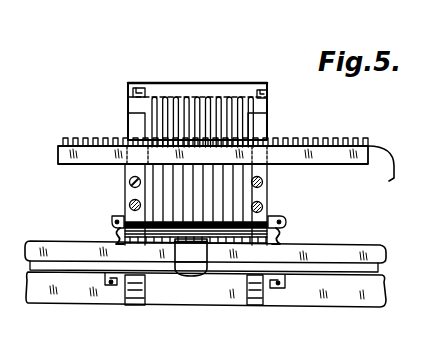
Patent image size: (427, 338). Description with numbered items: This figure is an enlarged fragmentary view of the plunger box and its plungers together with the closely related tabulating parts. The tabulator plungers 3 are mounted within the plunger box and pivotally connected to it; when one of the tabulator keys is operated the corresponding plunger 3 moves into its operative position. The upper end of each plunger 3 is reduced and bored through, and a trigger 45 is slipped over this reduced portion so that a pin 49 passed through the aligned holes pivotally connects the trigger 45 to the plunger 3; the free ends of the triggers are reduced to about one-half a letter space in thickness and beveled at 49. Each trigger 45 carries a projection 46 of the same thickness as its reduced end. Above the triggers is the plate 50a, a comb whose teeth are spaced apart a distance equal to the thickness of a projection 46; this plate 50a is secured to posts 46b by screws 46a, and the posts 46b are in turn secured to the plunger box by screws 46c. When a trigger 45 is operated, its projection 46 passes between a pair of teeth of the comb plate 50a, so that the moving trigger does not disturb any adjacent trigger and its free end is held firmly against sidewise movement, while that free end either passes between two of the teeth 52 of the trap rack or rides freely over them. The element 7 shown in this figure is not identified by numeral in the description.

The tabulator plunger 3 is at (268, 178).
The latch hook 7 is at (112, 238).
The trigger 45 is at (153, 133).
The projection 46 is at (243, 110).
The screw 46a is at (136, 89).
The post 46b is at (268, 123).
The screw 46c is at (264, 206).
The pin 49 is at (248, 137).
The plate 50a is at (203, 83).
The tooth 52 is at (379, 171).